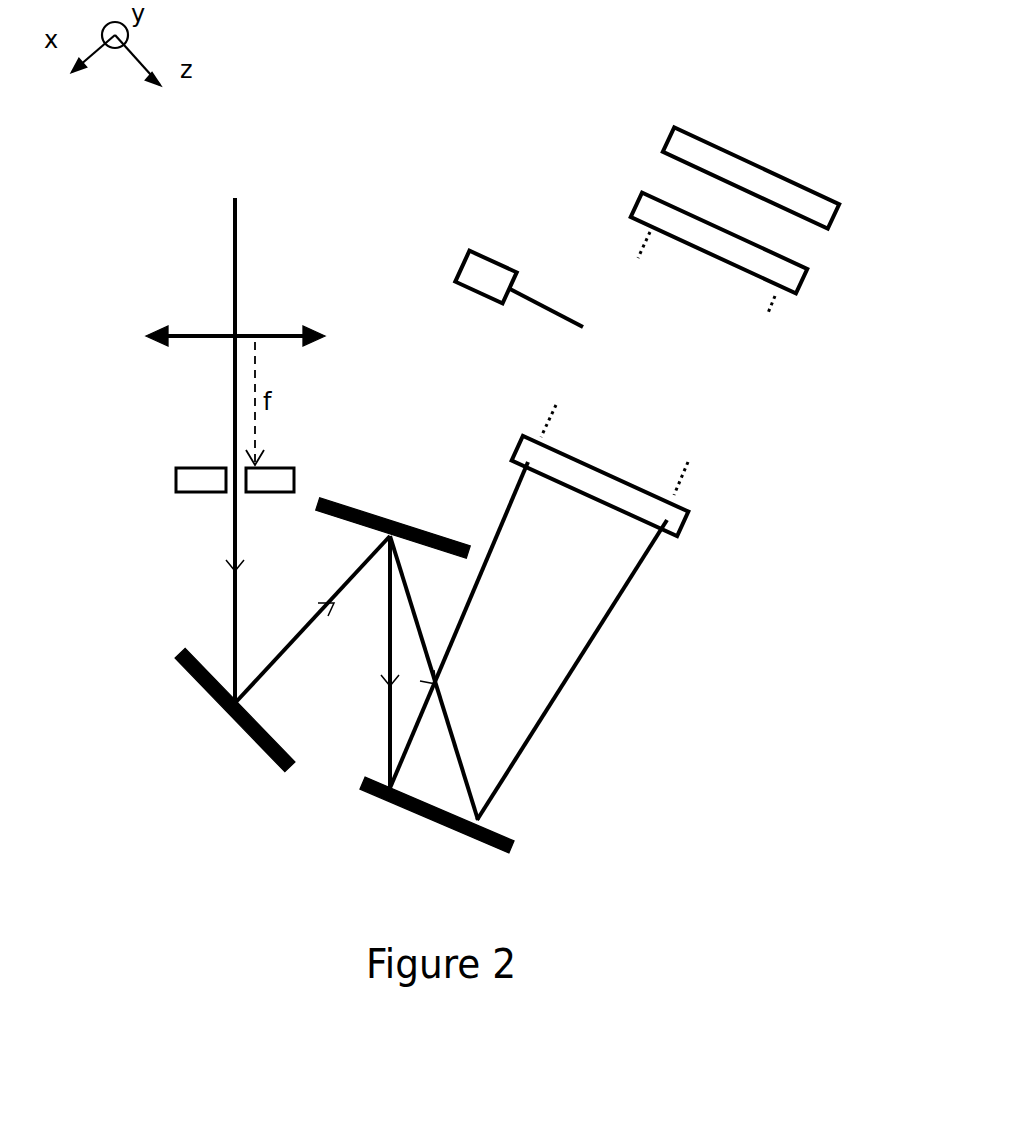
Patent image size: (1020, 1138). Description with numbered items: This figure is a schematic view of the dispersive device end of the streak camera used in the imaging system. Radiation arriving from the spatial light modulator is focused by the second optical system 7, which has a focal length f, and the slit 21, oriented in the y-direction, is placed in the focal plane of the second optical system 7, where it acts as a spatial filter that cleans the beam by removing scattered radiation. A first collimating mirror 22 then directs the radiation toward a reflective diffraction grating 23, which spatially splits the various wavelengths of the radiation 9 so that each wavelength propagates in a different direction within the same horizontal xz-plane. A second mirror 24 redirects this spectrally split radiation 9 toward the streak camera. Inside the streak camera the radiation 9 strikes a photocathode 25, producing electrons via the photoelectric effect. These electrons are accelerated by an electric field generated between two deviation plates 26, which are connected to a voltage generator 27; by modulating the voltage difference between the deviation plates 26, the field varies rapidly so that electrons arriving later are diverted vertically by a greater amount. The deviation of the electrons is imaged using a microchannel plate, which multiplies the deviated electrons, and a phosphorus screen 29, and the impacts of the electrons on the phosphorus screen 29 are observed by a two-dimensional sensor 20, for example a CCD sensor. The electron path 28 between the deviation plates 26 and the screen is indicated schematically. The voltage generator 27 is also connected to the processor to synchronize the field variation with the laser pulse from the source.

The second optical system 7 is at (176, 334).
The radiation 9 is at (420, 632).
The two-dimensional sensor 20 is at (708, 140).
The slit 21 is at (172, 484).
The first collimating mirror 22 is at (196, 688).
The reflective diffraction grating 23 is at (395, 518).
The second mirror 24 is at (370, 783).
The photocathode 25 is at (521, 436).
The deviation plates 26 is at (605, 272).
The voltage generator 27 is at (462, 280).
The optical path 28 is at (692, 484).
The phosphorus screen 29 is at (635, 196).